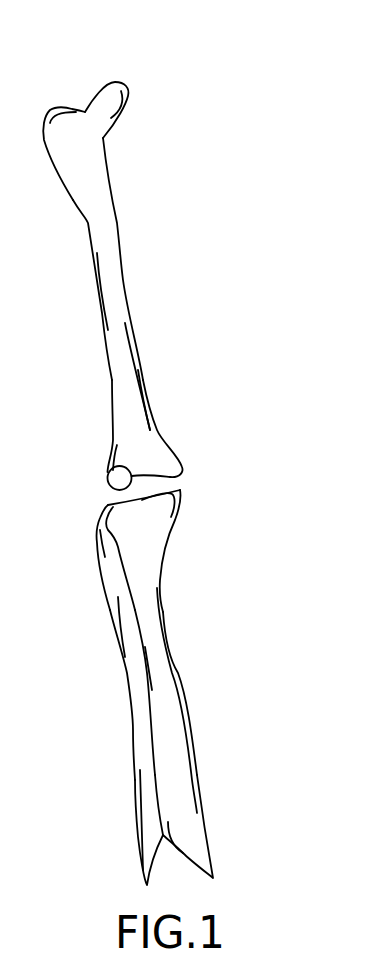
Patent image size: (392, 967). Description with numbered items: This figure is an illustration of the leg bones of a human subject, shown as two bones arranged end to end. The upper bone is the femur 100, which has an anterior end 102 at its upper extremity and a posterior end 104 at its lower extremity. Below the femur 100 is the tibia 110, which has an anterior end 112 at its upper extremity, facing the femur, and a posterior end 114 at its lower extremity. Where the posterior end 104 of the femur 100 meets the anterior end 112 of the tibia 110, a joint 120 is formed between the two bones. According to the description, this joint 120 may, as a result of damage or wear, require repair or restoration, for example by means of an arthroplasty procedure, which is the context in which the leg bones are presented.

The femur 100 is at (112, 285).
The anterior end of femur 102 is at (146, 83).
The posterior end of femur 104 is at (201, 455).
The tibia 110 is at (167, 707).
The anterior end of tibia 112 is at (203, 493).
The posterior end of tibia 114 is at (239, 857).
The joint 120 is at (138, 474).